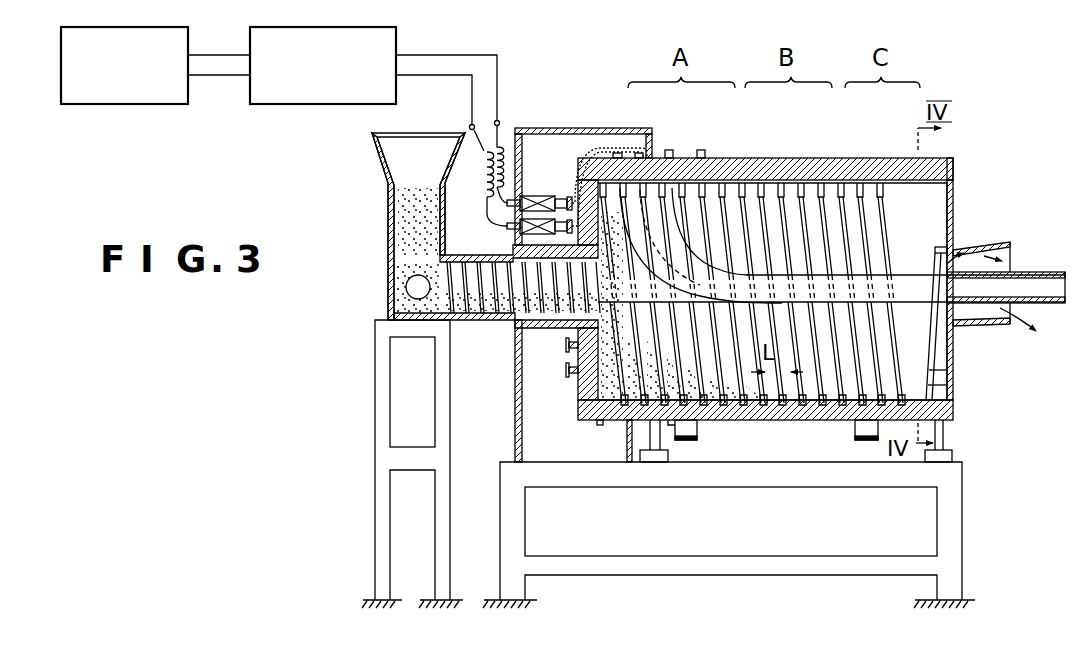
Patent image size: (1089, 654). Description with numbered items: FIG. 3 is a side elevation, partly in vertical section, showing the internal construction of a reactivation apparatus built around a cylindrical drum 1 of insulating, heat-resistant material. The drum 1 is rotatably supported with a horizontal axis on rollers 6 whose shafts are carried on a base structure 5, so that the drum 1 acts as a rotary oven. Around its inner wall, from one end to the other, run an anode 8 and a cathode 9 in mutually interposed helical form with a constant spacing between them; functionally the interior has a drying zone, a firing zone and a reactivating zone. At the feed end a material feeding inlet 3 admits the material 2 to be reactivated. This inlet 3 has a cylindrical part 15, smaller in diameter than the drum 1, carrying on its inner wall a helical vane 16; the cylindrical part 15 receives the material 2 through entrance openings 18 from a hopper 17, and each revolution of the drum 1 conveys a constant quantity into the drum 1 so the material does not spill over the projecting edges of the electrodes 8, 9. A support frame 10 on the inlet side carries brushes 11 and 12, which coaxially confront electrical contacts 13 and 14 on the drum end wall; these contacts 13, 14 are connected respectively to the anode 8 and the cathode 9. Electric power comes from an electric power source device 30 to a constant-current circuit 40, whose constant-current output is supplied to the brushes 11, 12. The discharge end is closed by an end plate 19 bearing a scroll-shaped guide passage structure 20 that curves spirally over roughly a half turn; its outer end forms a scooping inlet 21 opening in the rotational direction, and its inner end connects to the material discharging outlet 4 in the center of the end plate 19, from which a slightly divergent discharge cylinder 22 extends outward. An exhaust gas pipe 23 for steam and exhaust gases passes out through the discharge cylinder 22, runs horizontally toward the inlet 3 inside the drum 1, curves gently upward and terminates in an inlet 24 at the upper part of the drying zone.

The cylindrical drum 1 is at (873, 158).
The material to be reactivated 2 is at (405, 233).
The material feeding inlet 3 is at (596, 283).
The material discharging outlet 4 is at (940, 270).
The base structure 5 is at (958, 522).
The rollers 6 is at (690, 432).
The anode 8 is at (596, 256).
The cathode 9 is at (650, 193).
The support frame 10 is at (515, 395).
The brush 11 is at (565, 203).
The brush 12 is at (515, 232).
The electrical contact 13 is at (568, 200).
The electrical contact 14 is at (565, 345).
The cylindrical part 15 is at (484, 321).
The helical vane 16 is at (472, 261).
The hopper 17 is at (433, 152).
The entrance openings 18 is at (410, 311).
The end plate 19 is at (955, 180).
The guide passage structure 20 is at (938, 350).
The scooping inlet 21 is at (938, 382).
The discharge cylinder 22 is at (1000, 318).
The exhaust gas pipe 23 is at (891, 299).
The inlet of exhaust gas pipe 24 is at (678, 220).
The electric power source device 30 is at (118, 104).
The constant-current circuit 40 is at (298, 104).